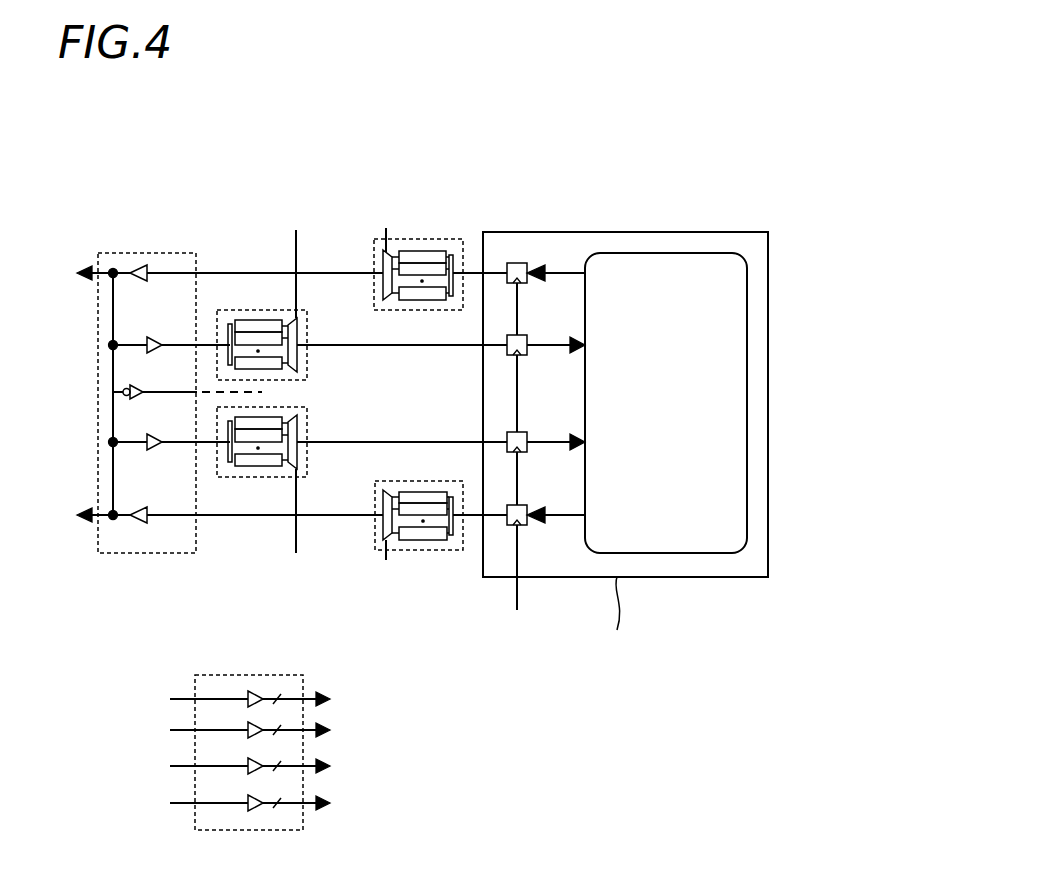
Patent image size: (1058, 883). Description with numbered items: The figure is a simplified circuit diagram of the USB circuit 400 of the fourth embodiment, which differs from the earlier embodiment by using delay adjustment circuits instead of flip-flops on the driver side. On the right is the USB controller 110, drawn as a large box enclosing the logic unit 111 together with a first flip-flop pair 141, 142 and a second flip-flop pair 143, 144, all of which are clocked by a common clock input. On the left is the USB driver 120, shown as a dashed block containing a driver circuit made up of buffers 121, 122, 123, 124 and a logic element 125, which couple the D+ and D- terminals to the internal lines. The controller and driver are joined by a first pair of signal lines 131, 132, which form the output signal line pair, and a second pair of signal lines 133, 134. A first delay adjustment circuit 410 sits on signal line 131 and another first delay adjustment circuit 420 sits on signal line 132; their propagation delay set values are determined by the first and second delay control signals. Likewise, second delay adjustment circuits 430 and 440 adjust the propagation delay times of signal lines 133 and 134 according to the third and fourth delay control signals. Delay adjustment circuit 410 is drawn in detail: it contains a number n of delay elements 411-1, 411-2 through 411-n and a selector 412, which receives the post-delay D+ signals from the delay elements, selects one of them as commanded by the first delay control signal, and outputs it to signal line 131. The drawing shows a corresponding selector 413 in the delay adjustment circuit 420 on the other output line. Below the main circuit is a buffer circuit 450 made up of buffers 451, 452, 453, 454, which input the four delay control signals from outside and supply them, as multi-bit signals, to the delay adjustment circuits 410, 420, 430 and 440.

The USB circuit 400 is at (734, 146).
The USB controller 110 is at (615, 232).
The logic unit 111 is at (747, 368).
The USB driver 120 is at (178, 253).
The buffer 121 is at (140, 265).
The buffer 122 is at (140, 510).
The buffer 123 is at (155, 340).
The buffer 124 is at (155, 437).
The logic element 125 is at (168, 378).
The signal line 131 is at (325, 270).
The signal line 132 is at (345, 515).
The signal line 133 is at (330, 343).
The signal line 134 is at (436, 442).
The flip-flop 141 is at (520, 263).
The flip-flop 142 is at (522, 506).
The flip-flop 143 is at (522, 337).
The flip-flop 144 is at (522, 433).
The delay adjustment circuit 410 is at (432, 239).
The delay element 411-1 is at (418, 256).
The delay element 411-2 is at (432, 268).
The delay element 411-n is at (412, 296).
The selector 412 is at (386, 302).
The selector switch 413 is at (383, 520).
The delay adjustment circuit 420 is at (425, 550).
The delay adjustment circuit 430 is at (258, 310).
The delay adjustment circuit 440 is at (307, 420).
The buffer circuit 450 is at (288, 675).
The buffer 451 is at (250, 694).
The buffer 452 is at (253, 728).
The buffer 453 is at (253, 766).
The buffer 454 is at (253, 803).